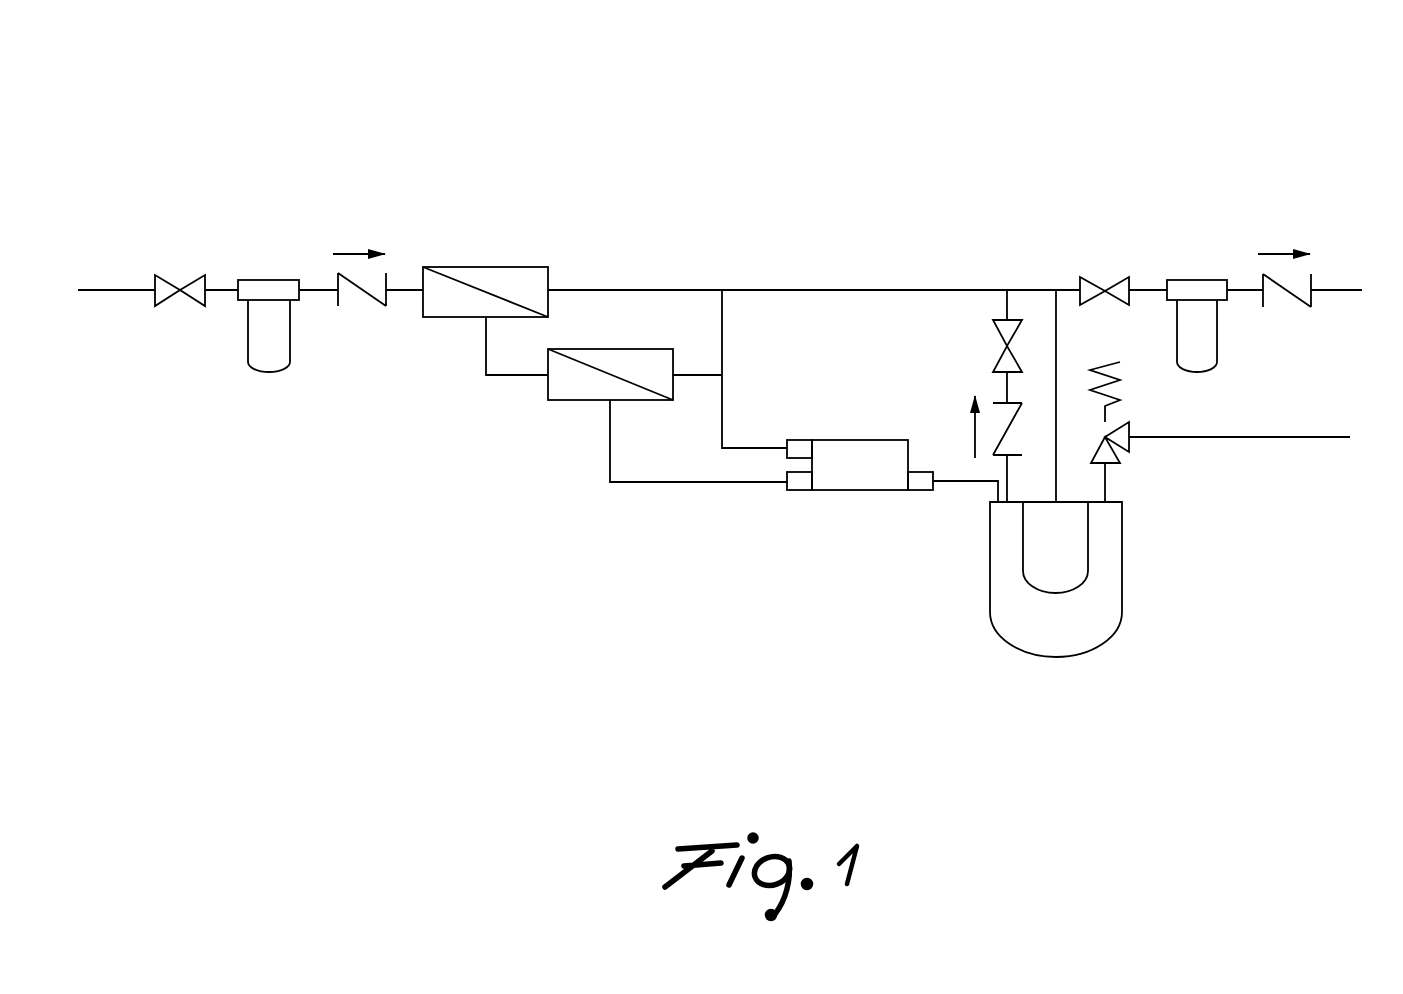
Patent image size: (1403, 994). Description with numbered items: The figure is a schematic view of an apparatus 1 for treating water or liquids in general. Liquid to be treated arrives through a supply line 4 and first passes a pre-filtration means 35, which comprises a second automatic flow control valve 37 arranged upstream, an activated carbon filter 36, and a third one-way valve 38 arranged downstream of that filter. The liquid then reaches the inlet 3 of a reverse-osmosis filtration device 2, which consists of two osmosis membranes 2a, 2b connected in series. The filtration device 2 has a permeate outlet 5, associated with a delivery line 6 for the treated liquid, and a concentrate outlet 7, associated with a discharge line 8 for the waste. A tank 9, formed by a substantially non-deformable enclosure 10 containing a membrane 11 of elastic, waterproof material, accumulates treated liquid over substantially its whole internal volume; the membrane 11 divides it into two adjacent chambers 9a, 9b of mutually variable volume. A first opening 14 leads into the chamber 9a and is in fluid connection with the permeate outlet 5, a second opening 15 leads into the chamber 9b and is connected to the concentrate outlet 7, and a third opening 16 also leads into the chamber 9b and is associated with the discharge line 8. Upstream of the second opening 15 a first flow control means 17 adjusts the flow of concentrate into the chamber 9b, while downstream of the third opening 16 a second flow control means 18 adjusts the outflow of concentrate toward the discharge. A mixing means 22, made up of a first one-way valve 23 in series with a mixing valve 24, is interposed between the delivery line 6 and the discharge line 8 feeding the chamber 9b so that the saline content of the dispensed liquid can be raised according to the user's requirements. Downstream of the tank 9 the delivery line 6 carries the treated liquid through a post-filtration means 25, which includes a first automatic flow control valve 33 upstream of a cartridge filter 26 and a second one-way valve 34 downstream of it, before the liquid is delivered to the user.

The apparatus for treating water or liquids 1 is at (1304, 165).
The filtration device 2 is at (548, 329).
The osmosis membrane 2a is at (492, 290).
The osmosis membrane 2b is at (590, 372).
The inlet 3 is at (399, 300).
The supply line 4 is at (112, 288).
The permeate outlet 5 is at (722, 329).
The delivery line 6 is at (1353, 290).
The concentrate outlet 7 is at (688, 485).
The discharge line 8 is at (1305, 440).
The tank 9 is at (1057, 634).
The chamber 9a is at (1077, 561).
The chamber 9b is at (1097, 631).
The enclosure 10 is at (991, 598).
The membrane 11 is at (1053, 594).
The first opening 14 is at (1058, 500).
The second opening 15 is at (990, 500).
The third opening 16 is at (1107, 500).
The first flow control means 17 is at (870, 430).
The second flow control means 18 is at (1130, 403).
The mixing means 22 is at (955, 347).
The first one-way valve 23 is at (1002, 450).
The mixing valve 24 is at (1000, 322).
The post-filtration means 25 is at (1206, 260).
The cartridge filter 26 is at (1212, 290).
The first automatic flow control valve 33 is at (1097, 283).
The second one-way valve 34 is at (1295, 307).
The pre-filtration means 35 is at (246, 257).
The activated carbon filter 36 is at (250, 290).
The second automatic flow control valve 37 is at (172, 306).
The third one-way valve 38 is at (362, 310).